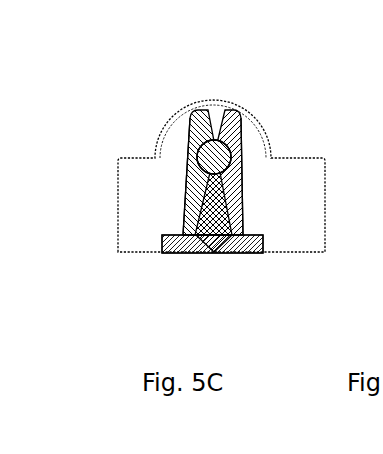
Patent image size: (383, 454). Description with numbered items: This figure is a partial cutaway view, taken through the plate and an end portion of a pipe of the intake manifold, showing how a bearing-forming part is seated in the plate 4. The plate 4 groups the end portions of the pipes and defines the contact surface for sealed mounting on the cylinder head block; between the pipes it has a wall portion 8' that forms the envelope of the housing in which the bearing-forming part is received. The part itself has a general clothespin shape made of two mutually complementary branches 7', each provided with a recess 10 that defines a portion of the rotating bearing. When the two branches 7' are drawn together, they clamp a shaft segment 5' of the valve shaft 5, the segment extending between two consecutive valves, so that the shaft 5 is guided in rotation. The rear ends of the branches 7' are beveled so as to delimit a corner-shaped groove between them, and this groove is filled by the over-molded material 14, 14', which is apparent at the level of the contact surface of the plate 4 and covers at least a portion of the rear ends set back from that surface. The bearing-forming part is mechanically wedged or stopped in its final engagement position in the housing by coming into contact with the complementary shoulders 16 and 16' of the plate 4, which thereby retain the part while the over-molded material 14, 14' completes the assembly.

The attachment and connection plate 4 is at (305, 208).
The shaft 5 is at (242, 128).
The shaft segment 5' is at (214, 157).
The branch 7' is at (212, 198).
The wall portion 8' is at (213, 97).
The recess 10 is at (212, 187).
The over-molded material 14 is at (219, 206).
The over-molded material 14' is at (198, 210).
The shoulder 16 is at (192, 268).
The shoulder 16' is at (249, 177).